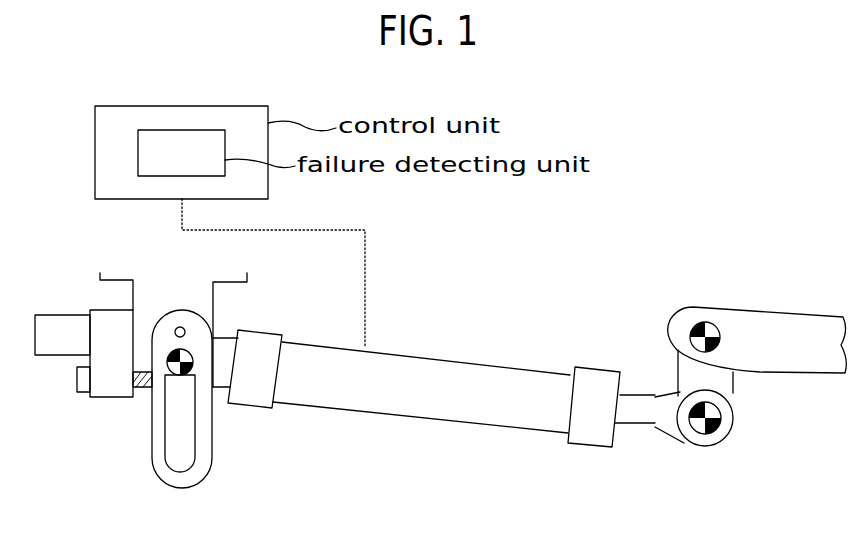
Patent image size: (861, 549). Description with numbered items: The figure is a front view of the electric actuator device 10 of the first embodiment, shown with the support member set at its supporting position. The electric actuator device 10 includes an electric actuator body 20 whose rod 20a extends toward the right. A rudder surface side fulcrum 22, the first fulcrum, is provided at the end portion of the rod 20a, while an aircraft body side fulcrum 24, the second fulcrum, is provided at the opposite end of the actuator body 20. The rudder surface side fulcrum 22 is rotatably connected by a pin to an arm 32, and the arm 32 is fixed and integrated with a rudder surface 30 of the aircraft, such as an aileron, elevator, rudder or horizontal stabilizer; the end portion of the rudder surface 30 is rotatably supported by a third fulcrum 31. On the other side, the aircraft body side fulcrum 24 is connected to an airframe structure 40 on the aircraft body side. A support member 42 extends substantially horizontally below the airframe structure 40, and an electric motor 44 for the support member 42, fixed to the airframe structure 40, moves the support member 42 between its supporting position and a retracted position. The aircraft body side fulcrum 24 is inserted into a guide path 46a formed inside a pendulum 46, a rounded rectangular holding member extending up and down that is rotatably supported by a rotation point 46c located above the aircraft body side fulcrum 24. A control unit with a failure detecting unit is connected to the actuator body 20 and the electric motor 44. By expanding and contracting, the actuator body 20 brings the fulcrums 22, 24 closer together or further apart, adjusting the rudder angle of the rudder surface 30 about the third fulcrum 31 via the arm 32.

The electric actuator device 10 is at (425, 302).
The electric actuator body 20 is at (516, 360).
The rod 20a is at (631, 430).
The rudder surface side fulcrum 22 is at (712, 434).
The aircraft body side fulcrum 24 is at (197, 376).
The rudder surface 30 is at (773, 306).
The third fulcrum 31 is at (705, 322).
The arm 32 is at (737, 393).
The airframe structure 40 is at (213, 300).
The support member 42 is at (178, 392).
The electric motor 44 is at (53, 312).
The pendulum 46 is at (152, 447).
The guide path 46a is at (180, 463).
The rotation point 46c is at (180, 326).